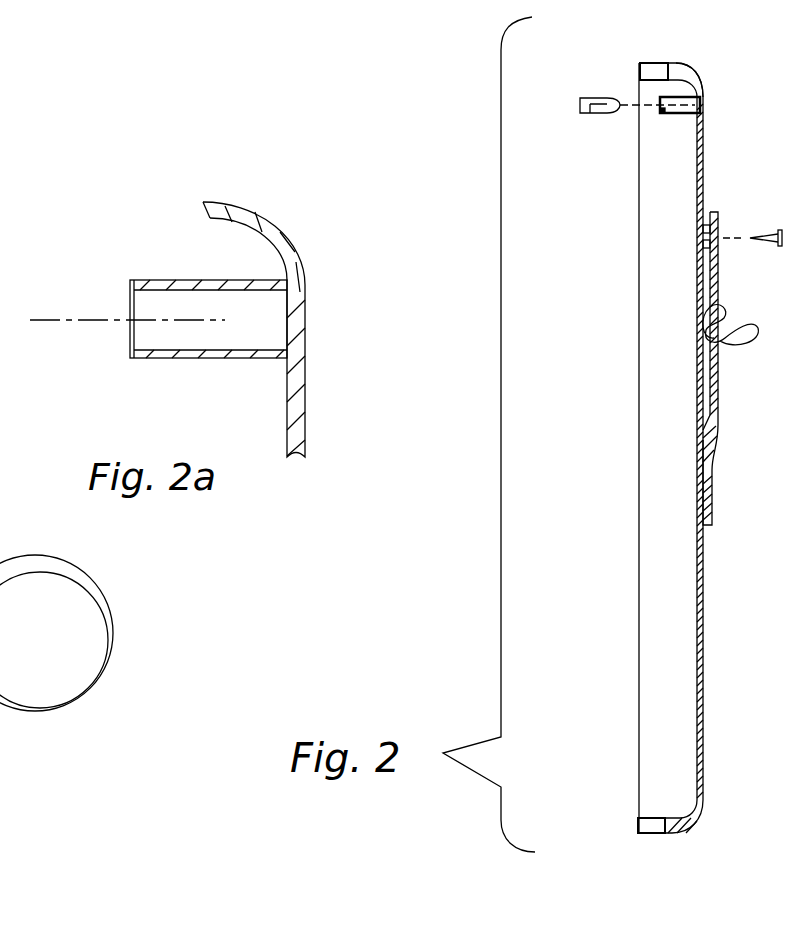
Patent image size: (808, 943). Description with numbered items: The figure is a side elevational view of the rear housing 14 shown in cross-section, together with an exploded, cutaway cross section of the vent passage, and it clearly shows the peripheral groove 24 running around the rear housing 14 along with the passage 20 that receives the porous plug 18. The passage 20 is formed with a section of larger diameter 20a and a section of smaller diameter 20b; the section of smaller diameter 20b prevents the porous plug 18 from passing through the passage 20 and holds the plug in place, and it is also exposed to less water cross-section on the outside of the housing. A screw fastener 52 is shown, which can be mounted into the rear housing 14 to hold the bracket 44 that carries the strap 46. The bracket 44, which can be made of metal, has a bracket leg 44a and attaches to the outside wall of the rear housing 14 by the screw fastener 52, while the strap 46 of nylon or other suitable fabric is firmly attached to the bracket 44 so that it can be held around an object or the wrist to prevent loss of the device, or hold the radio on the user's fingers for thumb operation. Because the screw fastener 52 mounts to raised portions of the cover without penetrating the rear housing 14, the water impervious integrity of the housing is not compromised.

In FIG. 2, the rear housing 14 is at (703, 665).
In FIG. 2, the porous plug 18 is at (589, 113).
In FIG. 2, the passage 20 is at (675, 115).
In FIG. 2A, the passage 20 is at (193, 360).
In FIG. 2, the section of larger diameter 20a is at (662, 106).
In FIG. 2A, the section of larger diameter 20a is at (147, 349).
In FIG. 2, the section of smaller diameter 20b is at (702, 103).
In FIG. 2A, the section of smaller diameter 20b is at (305, 327).
In FIG. 2, the peripheral groove 24 is at (640, 72).
In FIG. 2, the bracket 44 is at (718, 380).
In FIG. 2, the bracket leg 44a is at (712, 485).
In FIG. 2, the strap 46 is at (754, 328).
In FIG. 2, the screw fastener 52 is at (756, 237).